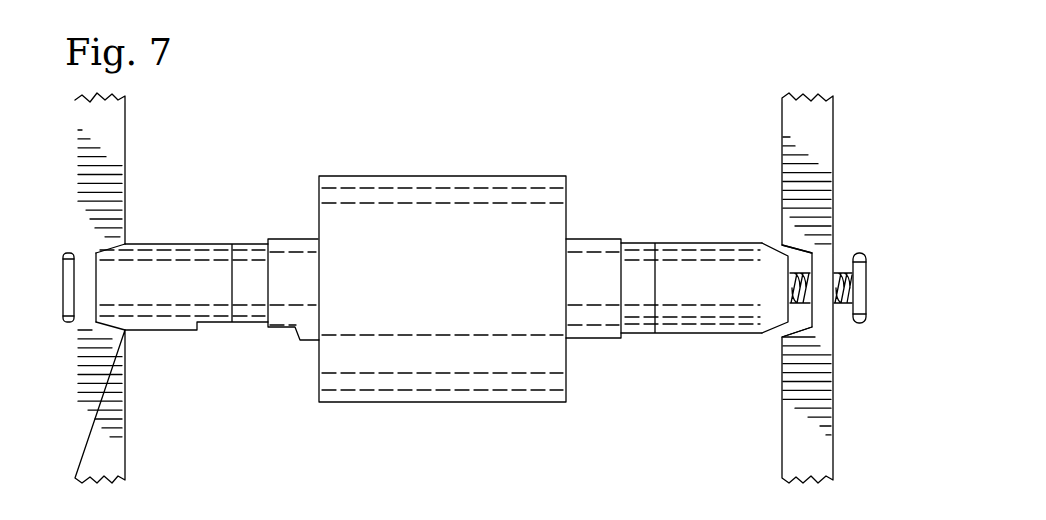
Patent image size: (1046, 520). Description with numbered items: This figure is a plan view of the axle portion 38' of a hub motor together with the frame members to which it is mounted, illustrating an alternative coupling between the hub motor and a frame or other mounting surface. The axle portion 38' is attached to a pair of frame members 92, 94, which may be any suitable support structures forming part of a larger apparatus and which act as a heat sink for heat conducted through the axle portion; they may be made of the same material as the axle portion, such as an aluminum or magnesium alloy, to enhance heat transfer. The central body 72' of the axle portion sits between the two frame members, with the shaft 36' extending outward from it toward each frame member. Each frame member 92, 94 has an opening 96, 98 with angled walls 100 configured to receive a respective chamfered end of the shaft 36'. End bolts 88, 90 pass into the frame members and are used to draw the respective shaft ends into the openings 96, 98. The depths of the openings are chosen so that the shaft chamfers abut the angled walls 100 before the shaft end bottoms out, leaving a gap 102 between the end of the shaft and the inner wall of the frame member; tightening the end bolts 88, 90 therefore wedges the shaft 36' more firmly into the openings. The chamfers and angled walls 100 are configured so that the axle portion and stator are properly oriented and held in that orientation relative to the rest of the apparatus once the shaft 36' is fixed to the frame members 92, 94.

The frame member 92 is at (118, 131).
The frame member 94 is at (824, 131).
The end bolt 88 is at (70, 253).
The end bolt 90 is at (858, 253).
The opening 96 is at (132, 236).
The opening 98 is at (765, 342).
The angled walls 100 is at (108, 253).
The gap 102 is at (103, 310).
The shaft 36' is at (431, 288).
The axle portion 38' is at (444, 262).
The roller body 72' is at (442, 289).